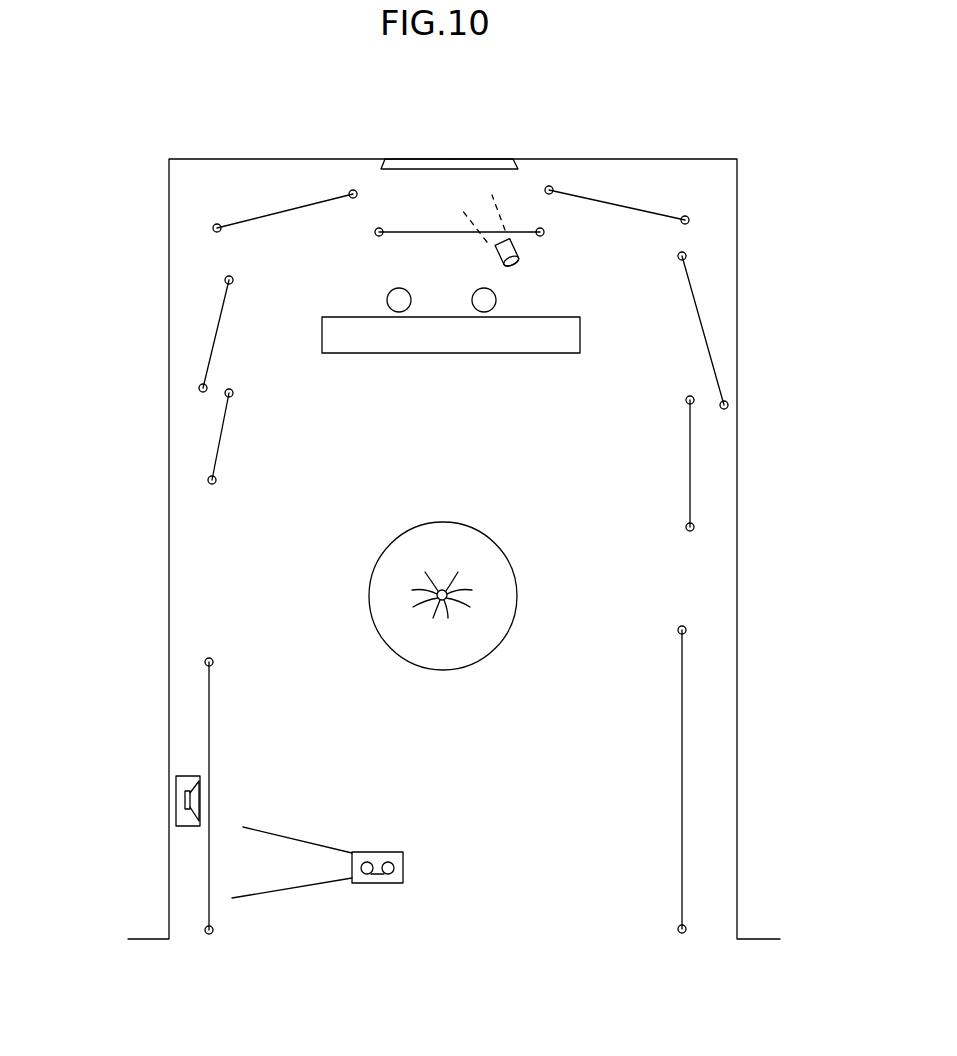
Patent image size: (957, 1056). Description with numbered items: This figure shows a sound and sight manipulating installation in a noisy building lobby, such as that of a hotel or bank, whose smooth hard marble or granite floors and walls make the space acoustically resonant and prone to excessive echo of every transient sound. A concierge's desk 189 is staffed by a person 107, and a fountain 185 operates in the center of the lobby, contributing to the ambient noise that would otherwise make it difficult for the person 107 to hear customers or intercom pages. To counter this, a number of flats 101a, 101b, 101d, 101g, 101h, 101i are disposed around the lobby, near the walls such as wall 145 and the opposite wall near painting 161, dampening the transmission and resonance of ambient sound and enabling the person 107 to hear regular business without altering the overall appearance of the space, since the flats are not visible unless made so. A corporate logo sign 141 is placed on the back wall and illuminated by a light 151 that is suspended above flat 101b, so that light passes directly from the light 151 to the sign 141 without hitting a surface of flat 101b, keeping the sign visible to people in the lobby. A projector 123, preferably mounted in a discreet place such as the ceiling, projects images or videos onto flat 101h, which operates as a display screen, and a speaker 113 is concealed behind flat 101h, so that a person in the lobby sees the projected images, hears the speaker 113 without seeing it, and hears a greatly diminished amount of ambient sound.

The flat 101a is at (292, 208).
The flat 101b is at (517, 230).
The flat 101d is at (222, 322).
The flat 101g is at (690, 483).
The flat 101h is at (209, 695).
The flat 101i is at (682, 735).
The person 107 is at (395, 298).
The speaker 113 is at (176, 800).
The projector 123 is at (385, 852).
The corporate logo sign 141 is at (416, 162).
The wall 145 is at (169, 537).
The light 151 is at (510, 249).
The painting 161 is at (737, 525).
The fountain 185 is at (440, 620).
The concierge's desk 189 is at (367, 340).